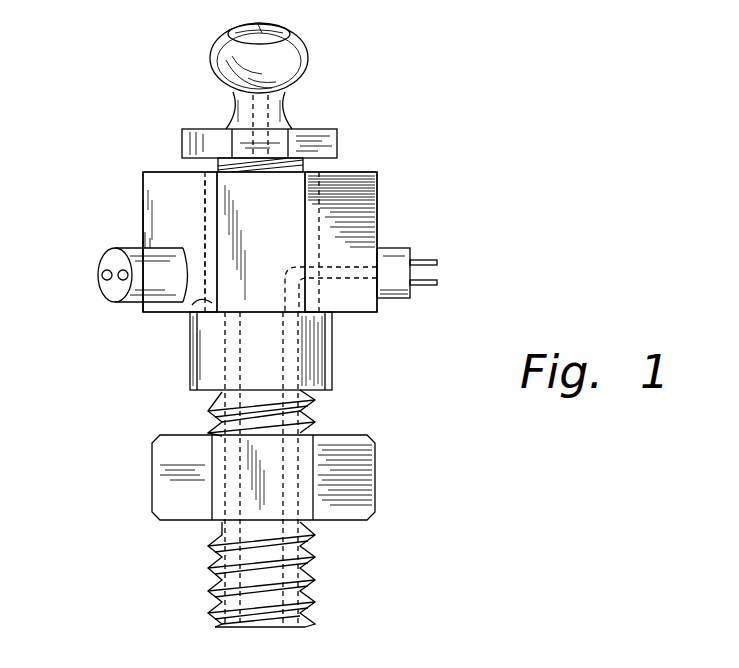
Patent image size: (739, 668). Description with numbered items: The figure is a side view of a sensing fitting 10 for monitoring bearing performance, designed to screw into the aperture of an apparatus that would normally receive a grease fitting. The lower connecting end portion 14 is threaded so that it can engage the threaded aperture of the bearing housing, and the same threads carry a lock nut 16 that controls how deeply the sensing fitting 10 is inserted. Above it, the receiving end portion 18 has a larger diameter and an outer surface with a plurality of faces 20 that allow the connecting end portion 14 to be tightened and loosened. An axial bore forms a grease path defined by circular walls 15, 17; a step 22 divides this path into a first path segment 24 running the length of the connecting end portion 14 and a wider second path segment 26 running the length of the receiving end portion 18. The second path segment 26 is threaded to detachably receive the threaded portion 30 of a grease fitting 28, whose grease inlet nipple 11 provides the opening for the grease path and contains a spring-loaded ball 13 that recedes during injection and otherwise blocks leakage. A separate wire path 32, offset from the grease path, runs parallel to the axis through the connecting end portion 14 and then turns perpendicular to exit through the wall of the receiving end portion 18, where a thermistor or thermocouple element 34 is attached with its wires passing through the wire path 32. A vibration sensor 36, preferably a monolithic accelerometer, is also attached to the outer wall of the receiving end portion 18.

The sensing fitting 10 is at (385, 390).
The grease inlet nipple 11 is at (300, 36).
The spring-loaded ball 13 is at (253, 32).
The connecting end portion 14 is at (312, 540).
The circular wall 15 is at (205, 200).
The lock nut 16 is at (163, 492).
The circular wall 17 is at (228, 340).
The receiving end portion 18 is at (143, 215).
The faces 20 is at (163, 183).
The step 22 is at (192, 305).
The first path segment 24 is at (235, 375).
The second path segment 26 is at (278, 228).
The grease fitting 28 is at (320, 130).
The threaded portion 30 is at (303, 168).
The wire path 32 is at (300, 334).
The temperature sensing element 34 is at (410, 248).
The vibration sensor 36 is at (92, 275).